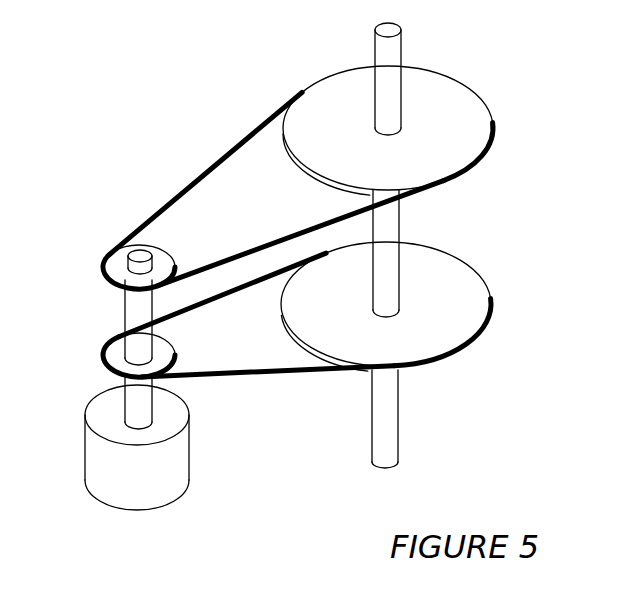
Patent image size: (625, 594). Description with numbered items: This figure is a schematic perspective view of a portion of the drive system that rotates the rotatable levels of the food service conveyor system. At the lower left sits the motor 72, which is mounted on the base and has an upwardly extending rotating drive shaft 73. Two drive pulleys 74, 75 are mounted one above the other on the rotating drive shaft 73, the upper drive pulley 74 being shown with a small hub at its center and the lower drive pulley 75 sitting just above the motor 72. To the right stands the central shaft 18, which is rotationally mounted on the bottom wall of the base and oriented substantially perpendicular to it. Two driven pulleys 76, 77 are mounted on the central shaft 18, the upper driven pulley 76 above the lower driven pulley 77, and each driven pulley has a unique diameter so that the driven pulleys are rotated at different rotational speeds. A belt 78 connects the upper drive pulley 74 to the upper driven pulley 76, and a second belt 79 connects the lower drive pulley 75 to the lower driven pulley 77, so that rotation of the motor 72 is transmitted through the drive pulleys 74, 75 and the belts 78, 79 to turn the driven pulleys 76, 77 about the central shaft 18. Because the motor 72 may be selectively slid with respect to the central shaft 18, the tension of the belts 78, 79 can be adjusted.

The central shaft 18 is at (392, 223).
The motor 72 is at (172, 470).
The rotating drive shaft 73 is at (128, 315).
The drive pulley 74 is at (108, 268).
The drive pulley 75 is at (106, 358).
The driven pulley 76 is at (465, 122).
The driven pulley 77 is at (462, 288).
The belt 78 is at (207, 185).
The belt 79 is at (200, 318).